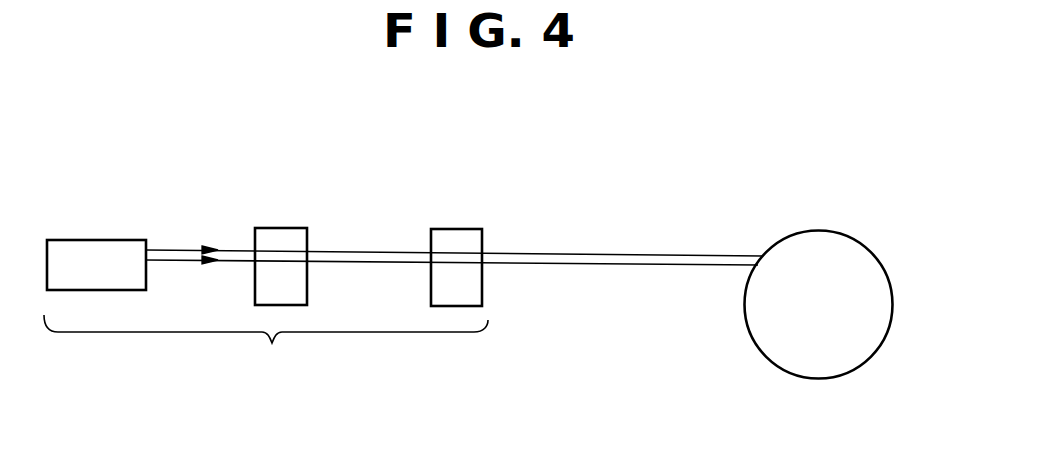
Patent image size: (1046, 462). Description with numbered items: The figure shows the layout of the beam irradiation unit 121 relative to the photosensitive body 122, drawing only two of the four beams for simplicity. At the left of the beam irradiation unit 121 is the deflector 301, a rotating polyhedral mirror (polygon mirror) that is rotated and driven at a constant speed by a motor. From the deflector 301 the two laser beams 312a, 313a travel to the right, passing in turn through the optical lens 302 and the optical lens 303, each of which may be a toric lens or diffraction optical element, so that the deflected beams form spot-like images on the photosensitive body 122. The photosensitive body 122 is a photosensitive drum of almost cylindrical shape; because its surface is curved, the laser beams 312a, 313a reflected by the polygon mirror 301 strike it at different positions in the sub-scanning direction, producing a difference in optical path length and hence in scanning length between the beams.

The beam irradiation unit 121 is at (266, 350).
The photosensitive body 122 is at (838, 232).
The deflector 301 is at (103, 240).
The optical lens 302 is at (284, 228).
The optical lens 303 is at (461, 229).
The laser beam 312a is at (609, 254).
The laser beam 313a is at (618, 266).